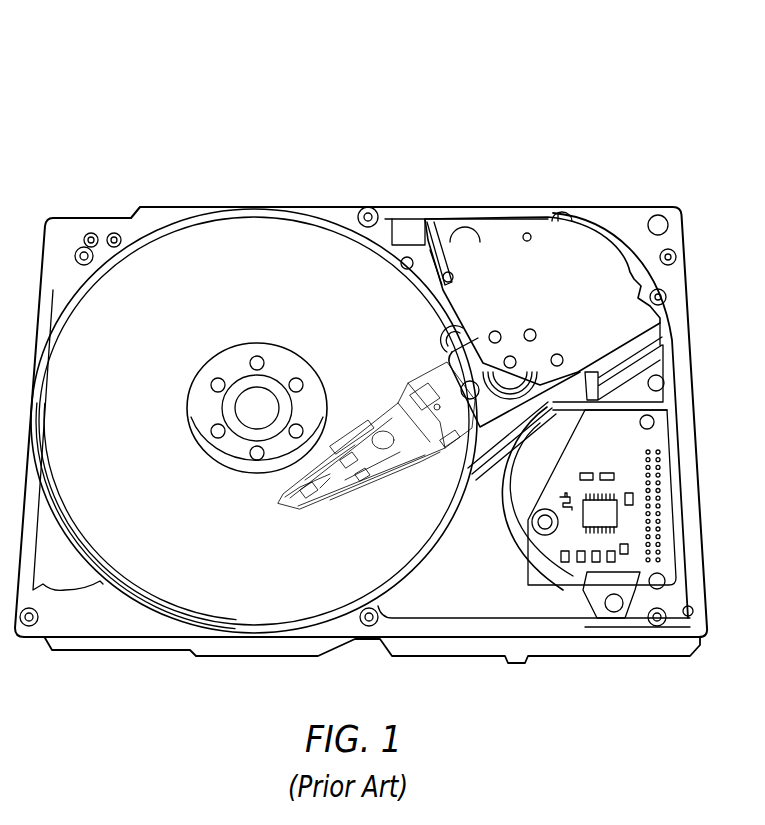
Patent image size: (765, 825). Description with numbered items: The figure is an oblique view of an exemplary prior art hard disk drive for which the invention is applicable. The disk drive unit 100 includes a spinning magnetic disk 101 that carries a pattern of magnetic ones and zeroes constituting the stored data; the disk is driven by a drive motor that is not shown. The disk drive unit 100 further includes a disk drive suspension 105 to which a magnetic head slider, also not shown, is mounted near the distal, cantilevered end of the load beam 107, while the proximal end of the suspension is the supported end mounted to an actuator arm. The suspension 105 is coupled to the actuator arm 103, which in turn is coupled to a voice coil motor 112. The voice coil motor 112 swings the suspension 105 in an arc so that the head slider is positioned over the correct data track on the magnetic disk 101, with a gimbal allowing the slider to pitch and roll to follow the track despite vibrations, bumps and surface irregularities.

The disk drive unit 100 is at (265, 177).
The magnetic disk 101 is at (212, 258).
The actuator arm 103 is at (484, 420).
The disk drive suspension 105 is at (316, 508).
The load beam 107 is at (358, 434).
The voice coil motor 112 is at (542, 292).